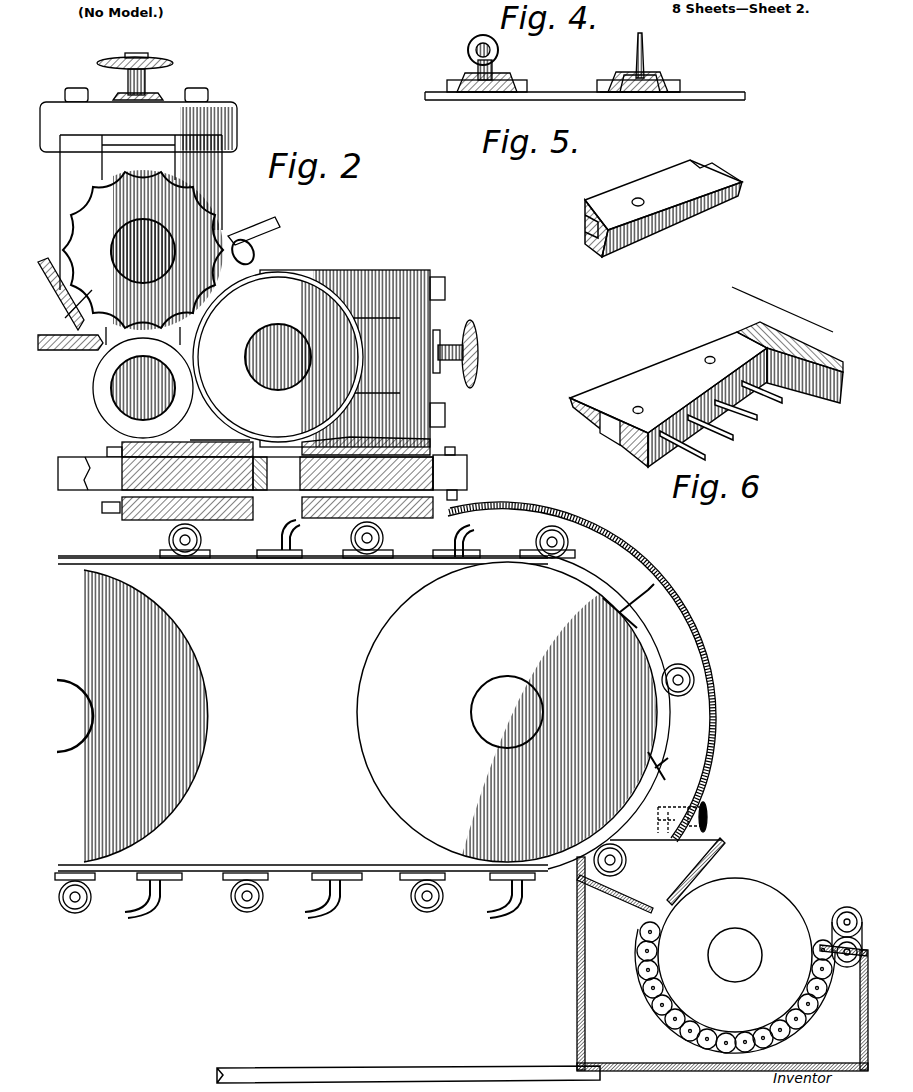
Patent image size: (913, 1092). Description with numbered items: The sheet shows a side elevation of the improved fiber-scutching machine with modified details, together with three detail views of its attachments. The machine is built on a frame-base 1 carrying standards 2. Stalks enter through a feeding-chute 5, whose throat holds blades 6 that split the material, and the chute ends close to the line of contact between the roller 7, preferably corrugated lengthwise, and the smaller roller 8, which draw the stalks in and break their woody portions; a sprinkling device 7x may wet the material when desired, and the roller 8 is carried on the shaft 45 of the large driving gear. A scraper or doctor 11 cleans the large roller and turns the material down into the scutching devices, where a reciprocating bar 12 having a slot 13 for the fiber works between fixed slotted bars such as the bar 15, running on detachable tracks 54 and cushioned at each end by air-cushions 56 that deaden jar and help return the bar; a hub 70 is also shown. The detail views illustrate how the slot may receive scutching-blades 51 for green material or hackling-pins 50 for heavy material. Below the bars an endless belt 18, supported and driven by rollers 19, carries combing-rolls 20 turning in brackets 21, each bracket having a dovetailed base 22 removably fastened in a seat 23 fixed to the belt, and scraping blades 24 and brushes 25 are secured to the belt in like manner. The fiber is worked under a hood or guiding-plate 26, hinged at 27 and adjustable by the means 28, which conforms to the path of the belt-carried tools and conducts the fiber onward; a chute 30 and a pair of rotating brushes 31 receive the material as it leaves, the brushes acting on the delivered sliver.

In FIG. 2, the frame-base 1 is at (408, 1061).
In FIG. 2, the standards 2 is at (410, 573).
In FIG. 2, the feeding-chute 5 is at (65, 294).
In FIG. 2, the blades 6 is at (137, 260).
In FIG. 2, the roller 7 is at (197, 212).
In FIG. 2, the sprinkling device 7x is at (264, 242).
In FIG. 2, the roller 8 is at (129, 388).
In FIG. 2, the shaft 45 is at (123, 393).
In FIG. 2, the fixed bar 15 is at (215, 430).
In FIG. 2, the roller hub 70 is at (248, 450).
In FIG. 2, the scraper or doctor 11 is at (305, 430).
In FIG. 2, the tracks 54 is at (433, 443).
In FIG. 2, the reciprocating bar 12 is at (455, 452).
In FIG. 6, the reciprocating bar 12 is at (668, 399).
In FIG. 2, the slot 13 is at (245, 473).
In FIG. 6, the slot 13 is at (790, 376).
In FIG. 2, the air-cushions 56 is at (468, 470).
In FIG. 2, the hinge 27 is at (467, 489).
In FIG. 2, the scutching-blades 51 is at (267, 505).
In FIG. 5, the scutching-blades 51 is at (663, 208).
In FIG. 2, the combing-rolls 20 is at (168, 540).
In FIG. 2, the brushes 25 is at (575, 660).
In FIG. 2, the hood or guiding-plate 26 is at (640, 556).
In FIG. 2, the endless belt 18 is at (332, 567).
In FIG. 4, the endless belt 18 is at (668, 93).
In FIG. 2, the rollers 19 is at (507, 712).
In FIG. 2, the brackets 21 is at (233, 887).
In FIG. 2, the adjusting means 28 is at (708, 815).
In FIG. 2, the chute 30 is at (651, 882).
In FIG. 2, the rotating brushes 31 is at (735, 965).
In FIG. 4, the recessed or dovetailed base 22 is at (660, 78).
In FIG. 4, the seat 23 is at (630, 76).
In FIG. 4, the scraping blades 24 is at (654, 52).
In FIG. 6, the hackling-pins 50 is at (715, 407).